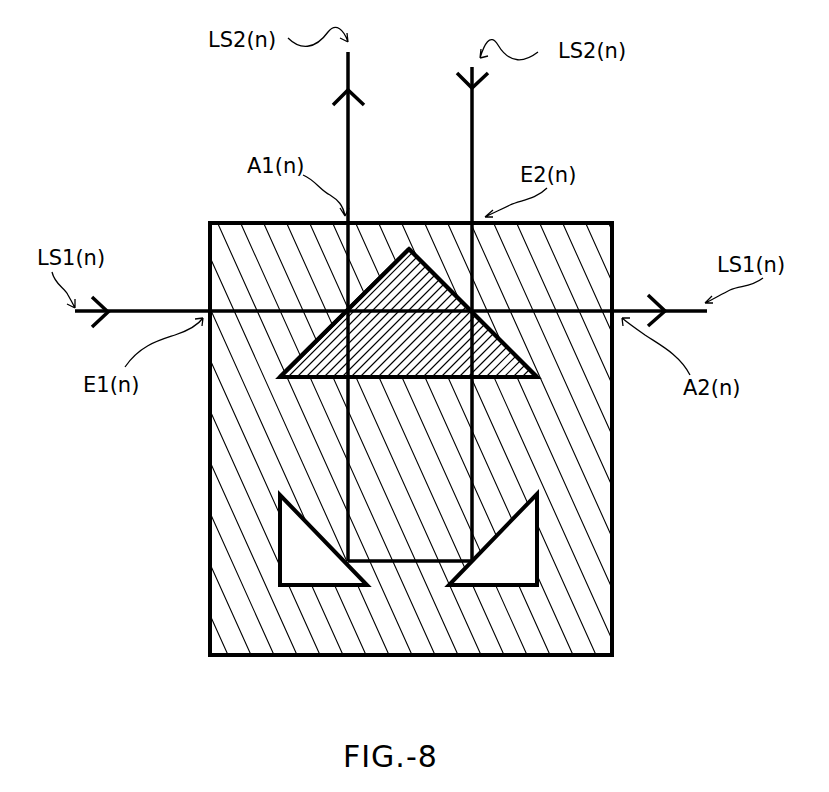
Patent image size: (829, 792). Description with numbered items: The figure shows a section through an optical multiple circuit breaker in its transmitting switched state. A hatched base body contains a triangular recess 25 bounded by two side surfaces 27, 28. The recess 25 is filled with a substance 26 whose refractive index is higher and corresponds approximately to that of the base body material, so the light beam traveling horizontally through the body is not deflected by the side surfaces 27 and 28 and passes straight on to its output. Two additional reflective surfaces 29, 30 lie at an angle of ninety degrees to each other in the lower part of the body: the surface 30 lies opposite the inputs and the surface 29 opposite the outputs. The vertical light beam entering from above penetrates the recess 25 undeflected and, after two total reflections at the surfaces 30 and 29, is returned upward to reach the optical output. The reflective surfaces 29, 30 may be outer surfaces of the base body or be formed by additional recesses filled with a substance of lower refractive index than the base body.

The triangular recess 25 is at (315, 380).
The substance of higher refractive index 26 is at (407, 293).
The side surface of recess 27 is at (315, 338).
The side surface of recess 28 is at (500, 335).
The reflective surface 29 is at (318, 542).
The reflective surface 30 is at (500, 538).